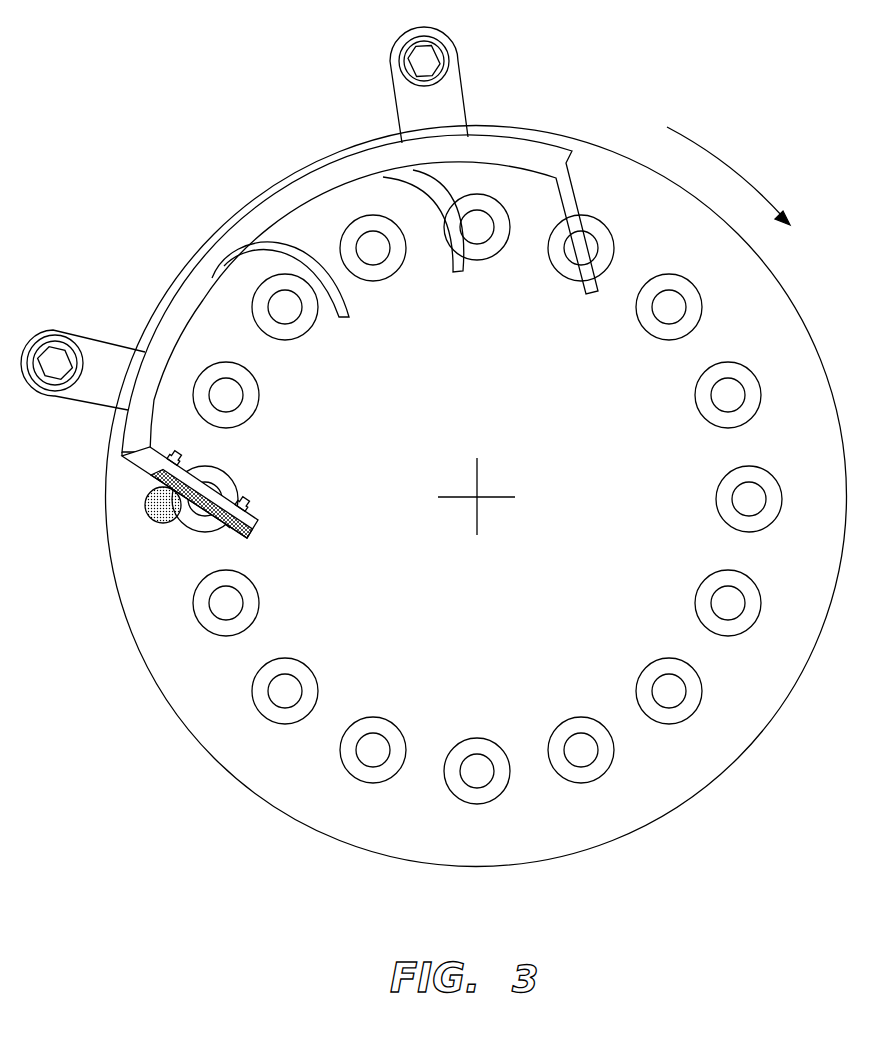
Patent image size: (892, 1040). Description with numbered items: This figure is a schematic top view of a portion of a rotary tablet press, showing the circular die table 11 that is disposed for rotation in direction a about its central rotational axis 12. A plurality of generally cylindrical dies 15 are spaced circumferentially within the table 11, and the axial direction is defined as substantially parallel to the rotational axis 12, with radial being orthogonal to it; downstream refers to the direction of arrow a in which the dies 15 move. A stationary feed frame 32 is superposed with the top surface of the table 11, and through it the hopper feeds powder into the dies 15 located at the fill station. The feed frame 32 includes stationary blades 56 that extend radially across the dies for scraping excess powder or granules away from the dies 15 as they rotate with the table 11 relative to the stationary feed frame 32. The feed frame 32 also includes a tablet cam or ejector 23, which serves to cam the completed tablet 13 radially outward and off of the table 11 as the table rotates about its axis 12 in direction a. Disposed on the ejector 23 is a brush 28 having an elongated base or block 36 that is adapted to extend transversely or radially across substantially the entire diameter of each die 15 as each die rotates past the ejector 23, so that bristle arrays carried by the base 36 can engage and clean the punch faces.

The die table 11 is at (615, 468).
The rotational axis 12 is at (477, 497).
The tablet 13 is at (152, 515).
The die 15 is at (377, 716).
The tablet cam or ejector 23 is at (120, 462).
The brush 28 is at (278, 543).
The feed frame 32 is at (305, 195).
The elongated base or block 36 is at (158, 449).
The stationary blades 56 is at (344, 320).
The direction of rotation a is at (729, 166).